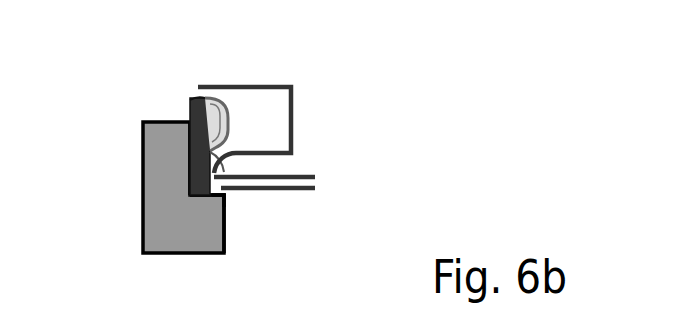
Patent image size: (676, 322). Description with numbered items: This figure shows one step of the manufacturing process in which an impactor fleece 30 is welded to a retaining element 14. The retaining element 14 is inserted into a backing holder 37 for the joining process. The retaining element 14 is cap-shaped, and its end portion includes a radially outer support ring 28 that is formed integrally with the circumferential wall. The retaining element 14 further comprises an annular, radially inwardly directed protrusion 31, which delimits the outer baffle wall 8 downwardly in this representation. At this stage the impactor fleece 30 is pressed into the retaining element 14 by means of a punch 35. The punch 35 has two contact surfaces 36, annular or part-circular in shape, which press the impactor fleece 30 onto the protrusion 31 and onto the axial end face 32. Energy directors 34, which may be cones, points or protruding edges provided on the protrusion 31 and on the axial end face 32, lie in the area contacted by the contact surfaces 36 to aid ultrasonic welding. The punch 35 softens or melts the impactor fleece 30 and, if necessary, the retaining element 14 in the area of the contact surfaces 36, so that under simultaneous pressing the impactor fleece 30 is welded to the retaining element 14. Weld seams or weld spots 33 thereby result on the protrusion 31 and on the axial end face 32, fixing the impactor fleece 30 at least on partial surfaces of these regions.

The outer baffle wall 8 is at (207, 154).
The retaining element 14 is at (188, 165).
The radially outer support ring 28 is at (190, 212).
The impactor fleece 30 is at (215, 128).
The protrusion 31 is at (223, 200).
The axial end face 32 is at (195, 106).
The weld seams or weld spots 33 is at (195, 105).
The energy directors 34 is at (222, 191).
The punch 35 is at (272, 98).
The contact surfaces 36 is at (222, 191).
The backing holder 37 is at (143, 225).